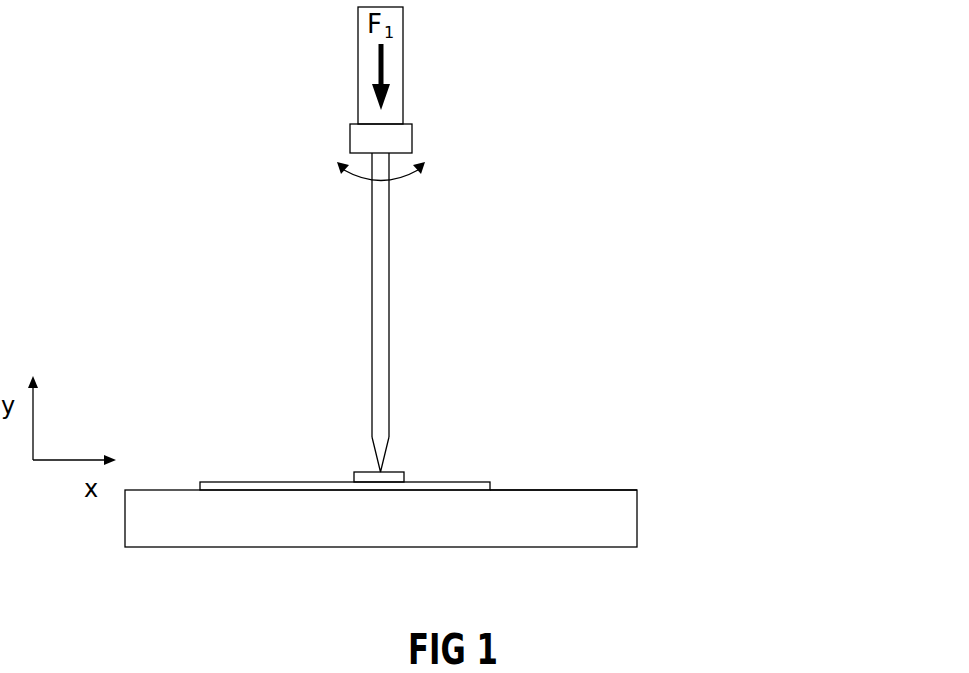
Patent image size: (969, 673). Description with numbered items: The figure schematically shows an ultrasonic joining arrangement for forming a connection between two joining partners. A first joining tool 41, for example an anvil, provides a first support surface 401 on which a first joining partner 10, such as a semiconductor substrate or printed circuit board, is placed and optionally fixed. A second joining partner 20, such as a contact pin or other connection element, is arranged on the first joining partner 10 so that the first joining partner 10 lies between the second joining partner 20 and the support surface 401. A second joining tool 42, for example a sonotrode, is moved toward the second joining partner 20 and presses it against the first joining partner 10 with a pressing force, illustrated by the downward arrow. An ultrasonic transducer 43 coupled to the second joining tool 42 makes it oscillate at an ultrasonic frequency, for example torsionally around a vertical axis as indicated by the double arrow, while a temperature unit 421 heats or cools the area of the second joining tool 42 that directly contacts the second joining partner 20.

The first joining partner 10 is at (485, 488).
The second joining partner 20 is at (404, 478).
The first joining tool 41 is at (625, 521).
The second joining tool 42 is at (378, 277).
The ultrasonic transducer 43 is at (360, 142).
The first support surface 401 is at (600, 486).
The temperature unit 421 is at (352, 448).